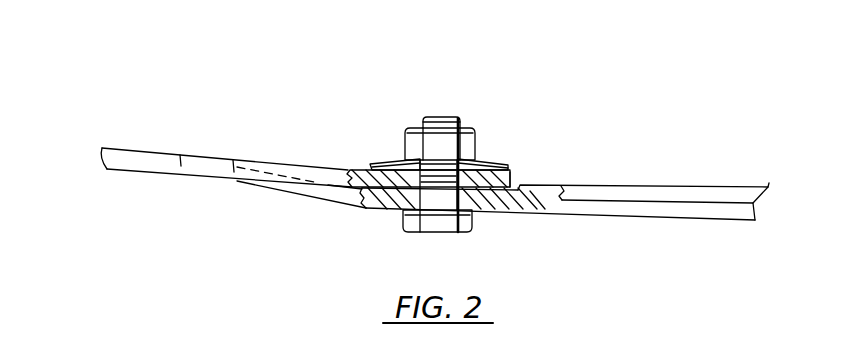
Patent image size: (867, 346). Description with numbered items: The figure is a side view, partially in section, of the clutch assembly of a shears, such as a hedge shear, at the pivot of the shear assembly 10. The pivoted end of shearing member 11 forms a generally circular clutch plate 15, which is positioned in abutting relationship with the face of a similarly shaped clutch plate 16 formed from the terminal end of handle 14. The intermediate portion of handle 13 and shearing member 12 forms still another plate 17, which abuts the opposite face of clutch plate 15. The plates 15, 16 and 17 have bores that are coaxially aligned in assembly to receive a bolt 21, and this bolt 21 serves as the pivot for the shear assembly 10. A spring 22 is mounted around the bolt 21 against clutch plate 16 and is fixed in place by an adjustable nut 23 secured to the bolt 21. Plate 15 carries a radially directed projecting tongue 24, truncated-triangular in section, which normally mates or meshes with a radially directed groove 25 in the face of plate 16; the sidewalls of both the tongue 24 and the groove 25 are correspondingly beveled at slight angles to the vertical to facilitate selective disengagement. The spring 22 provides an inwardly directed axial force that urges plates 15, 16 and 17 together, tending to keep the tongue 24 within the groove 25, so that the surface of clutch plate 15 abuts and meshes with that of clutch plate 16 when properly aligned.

The shear assembly 10 is at (497, 22).
The shearing member 11 is at (700, 172).
The shearing member 12 is at (672, 221).
The handle 13 is at (320, 205).
The handle 14 is at (328, 140).
The clutch plate 15 is at (357, 192).
The clutch plate 16 is at (512, 173).
The plate 17 is at (393, 203).
The bolt 21 is at (458, 117).
The spring 22 is at (480, 162).
The adjustable nut 23 is at (472, 131).
The projecting tongue 24 is at (400, 163).
The groove 25 is at (463, 201).